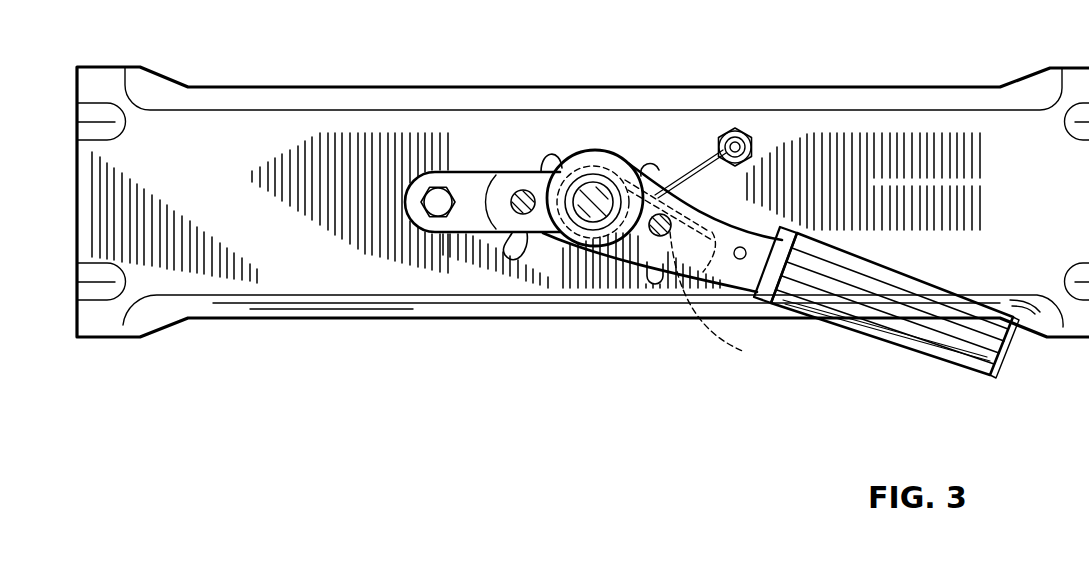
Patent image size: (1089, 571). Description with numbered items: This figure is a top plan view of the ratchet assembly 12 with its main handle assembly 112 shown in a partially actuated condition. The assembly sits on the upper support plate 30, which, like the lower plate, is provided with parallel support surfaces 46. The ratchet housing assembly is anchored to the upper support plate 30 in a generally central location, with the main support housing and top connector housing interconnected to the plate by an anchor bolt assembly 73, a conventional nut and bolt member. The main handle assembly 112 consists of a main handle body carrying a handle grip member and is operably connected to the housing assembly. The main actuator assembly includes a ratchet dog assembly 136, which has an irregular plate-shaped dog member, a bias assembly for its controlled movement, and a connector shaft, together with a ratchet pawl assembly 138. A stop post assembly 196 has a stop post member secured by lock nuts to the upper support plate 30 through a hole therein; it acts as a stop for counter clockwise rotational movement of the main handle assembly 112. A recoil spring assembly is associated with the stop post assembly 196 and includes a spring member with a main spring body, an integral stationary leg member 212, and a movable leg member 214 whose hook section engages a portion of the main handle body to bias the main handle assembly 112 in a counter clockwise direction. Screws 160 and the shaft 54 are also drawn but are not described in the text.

The ratchet assembly 12 is at (402, 350).
The parallel support surfaces 46 is at (143, 145).
The upper support plate 30 is at (280, 133).
The anchor bolt assembly 73 is at (438, 202).
The screws 160 is at (523, 202).
The ratchet dog assembly 136 is at (560, 148).
The pivot shaft 54 is at (594, 200).
The stationary leg member 212 is at (695, 165).
The stop post assembly 196 is at (752, 148).
The ratchet pawl assembly 138 is at (653, 283).
The movable leg member 214 is at (745, 352).
The main handle assembly 112 is at (917, 357).